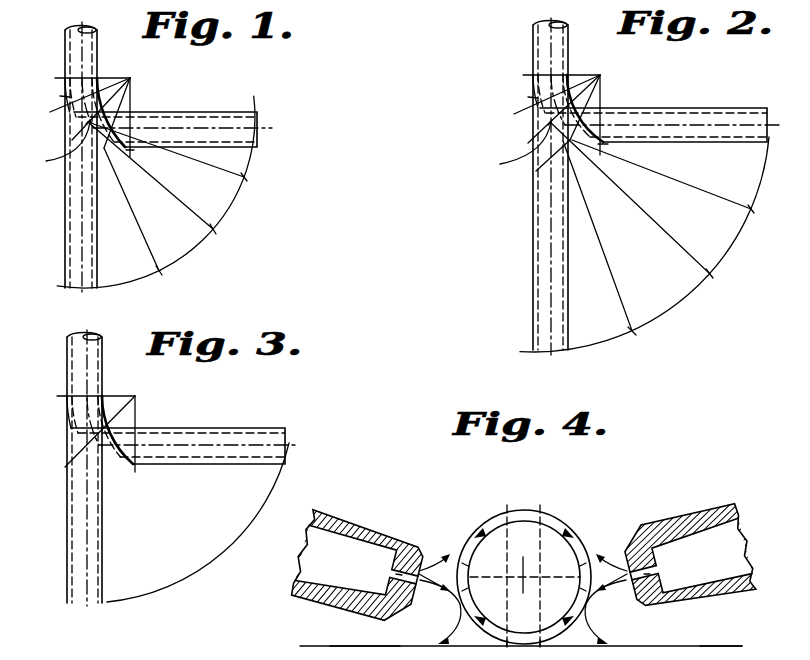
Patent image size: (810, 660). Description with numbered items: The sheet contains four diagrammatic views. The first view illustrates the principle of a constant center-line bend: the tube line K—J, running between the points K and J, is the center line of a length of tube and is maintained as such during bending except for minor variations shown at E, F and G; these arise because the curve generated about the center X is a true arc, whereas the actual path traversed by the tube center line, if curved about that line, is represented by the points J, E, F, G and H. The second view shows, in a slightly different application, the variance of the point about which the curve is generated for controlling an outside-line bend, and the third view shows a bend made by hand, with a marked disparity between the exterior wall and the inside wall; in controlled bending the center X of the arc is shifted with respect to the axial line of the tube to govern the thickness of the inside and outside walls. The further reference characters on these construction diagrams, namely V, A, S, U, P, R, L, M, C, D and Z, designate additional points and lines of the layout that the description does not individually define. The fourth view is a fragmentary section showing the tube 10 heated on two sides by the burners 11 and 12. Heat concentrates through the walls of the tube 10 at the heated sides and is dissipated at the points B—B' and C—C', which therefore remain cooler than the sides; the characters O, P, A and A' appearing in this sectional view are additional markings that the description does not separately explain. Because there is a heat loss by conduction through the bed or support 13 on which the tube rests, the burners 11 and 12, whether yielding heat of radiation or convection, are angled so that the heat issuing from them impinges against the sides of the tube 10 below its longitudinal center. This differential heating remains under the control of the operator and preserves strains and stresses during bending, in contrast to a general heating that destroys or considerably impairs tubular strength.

In FIG. 1, the tube center line K is at (77, 29).
In FIG. 2, the tube center line K is at (536, 25).
In FIG. 1, the center line path end point H is at (258, 128).
In FIG. 2, the center line path end point H is at (767, 132).
In FIG. 1, the horizontal reference line V is at (58, 78).
In FIG. 2, the horizontal reference line V is at (531, 75).
In FIG. 1, the reference point / nozzle A is at (148, 110).
In FIG. 2, the reference point / nozzle A is at (613, 114).
In FIG. 3, the reference point / nozzle A is at (112, 433).
In FIG. 4, the reference point / nozzle A is at (374, 574).
In FIG. 1, the outer bend arc S is at (99, 79).
In FIG. 2, the outer bend arc S is at (568, 74).
In FIG. 4, the outer bend arc S is at (300, 646).
In FIG. 1, the inner wall arc U is at (130, 111).
In FIG. 1, the centerline arc / orifice P is at (140, 118).
In FIG. 2, the centerline arc / orifice P is at (536, 171).
In FIG. 4, the centerline arc / orifice P is at (626, 575).
In FIG. 1, the inner arc R is at (152, 126).
In FIG. 2, the inner arc R is at (604, 145).
In FIG. 1, the reference point L is at (60, 96).
In FIG. 2, the reference point L is at (523, 98).
In FIG. 1, the cooler point B is at (85, 99).
In FIG. 2, the cooler point B is at (550, 98).
In FIG. 3, the cooler point B is at (87, 396).
In FIG. 4, the cooler point B is at (505, 569).
In FIG. 1, the intersection point M is at (84, 123).
In FIG. 2, the intersection point M is at (540, 124).
In FIG. 1, the cooler point C is at (78, 130).
In FIG. 2, the cooler point C is at (533, 138).
In FIG. 3, the cooler point C is at (198, 522).
In FIG. 4, the cooler point C is at (506, 650).
In FIG. 1, the center of arc X is at (47, 161).
In FIG. 2, the center of arc X is at (501, 164).
In FIG. 1, the reference point / pipe D is at (105, 148).
In FIG. 2, the reference point / pipe D is at (572, 142).
In FIG. 3, the reference point / pipe D is at (99, 336).
In FIG. 1, the reference point Z is at (133, 152).
In FIG. 1, the tube center line J is at (84, 292).
In FIG. 2, the tube center line J is at (523, 352).
In FIG. 1, the minor variation point E is at (160, 271).
In FIG. 2, the minor variation point E is at (635, 333).
In FIG. 3, the minor variation point E is at (286, 432).
In FIG. 1, the minor variation point F is at (213, 229).
In FIG. 2, the minor variation point F is at (710, 272).
In FIG. 4, the minor variation point F is at (742, 646).
In FIG. 1, the minor variation point G is at (246, 177).
In FIG. 2, the minor variation point G is at (749, 217).
In FIG. 4, the tube 10 is at (575, 530).
In FIG. 4, the burner 11 is at (690, 516).
In FIG. 4, the burner 12 is at (371, 527).
In FIG. 4, the bed or support 13 is at (344, 646).
In FIG. 4, the pipe center O is at (523, 591).
In FIG. 4, the cooler point B' is at (542, 569).
In FIG. 4, the cooler point C' is at (547, 650).
In FIG. 4, the nozzle outlet A' is at (665, 572).